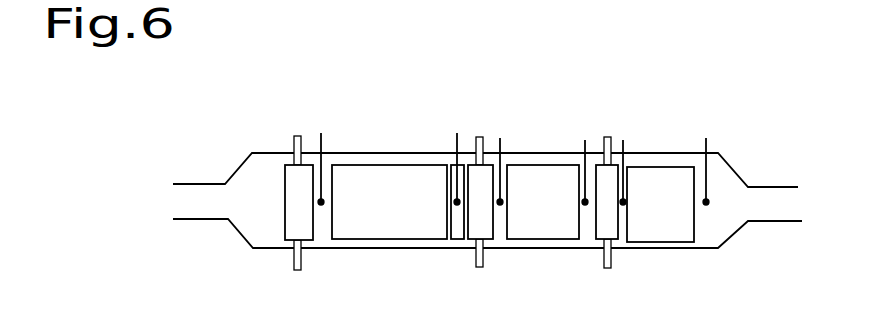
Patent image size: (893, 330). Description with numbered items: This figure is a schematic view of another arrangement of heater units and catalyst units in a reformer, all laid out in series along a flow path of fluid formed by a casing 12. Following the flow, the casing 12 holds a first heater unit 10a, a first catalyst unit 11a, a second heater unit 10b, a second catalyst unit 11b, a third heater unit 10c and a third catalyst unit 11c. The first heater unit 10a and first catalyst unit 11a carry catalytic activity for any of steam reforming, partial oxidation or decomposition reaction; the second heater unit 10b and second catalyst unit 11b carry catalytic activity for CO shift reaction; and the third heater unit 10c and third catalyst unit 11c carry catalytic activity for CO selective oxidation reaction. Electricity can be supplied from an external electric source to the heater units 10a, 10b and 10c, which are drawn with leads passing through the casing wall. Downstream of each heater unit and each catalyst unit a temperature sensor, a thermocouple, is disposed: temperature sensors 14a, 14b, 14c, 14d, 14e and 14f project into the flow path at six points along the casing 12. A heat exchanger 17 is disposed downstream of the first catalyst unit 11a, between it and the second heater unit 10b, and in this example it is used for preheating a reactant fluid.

The casing 12 is at (238, 167).
The first heater unit 10a is at (282, 242).
The second heater unit 10b is at (470, 242).
The third heater unit 10c is at (597, 242).
The first catalyst unit 11a is at (387, 164).
The second catalyst unit 11b is at (537, 165).
The third catalyst unit 11c is at (657, 167).
The temperature sensor 14a is at (332, 125).
The temperature sensor 14b is at (457, 145).
The temperature sensor 14c is at (500, 140).
The temperature sensor 14d is at (585, 140).
The temperature sensor 14e is at (624, 140).
The temperature sensor 14f is at (708, 147).
The heat exchanger 17 is at (457, 240).